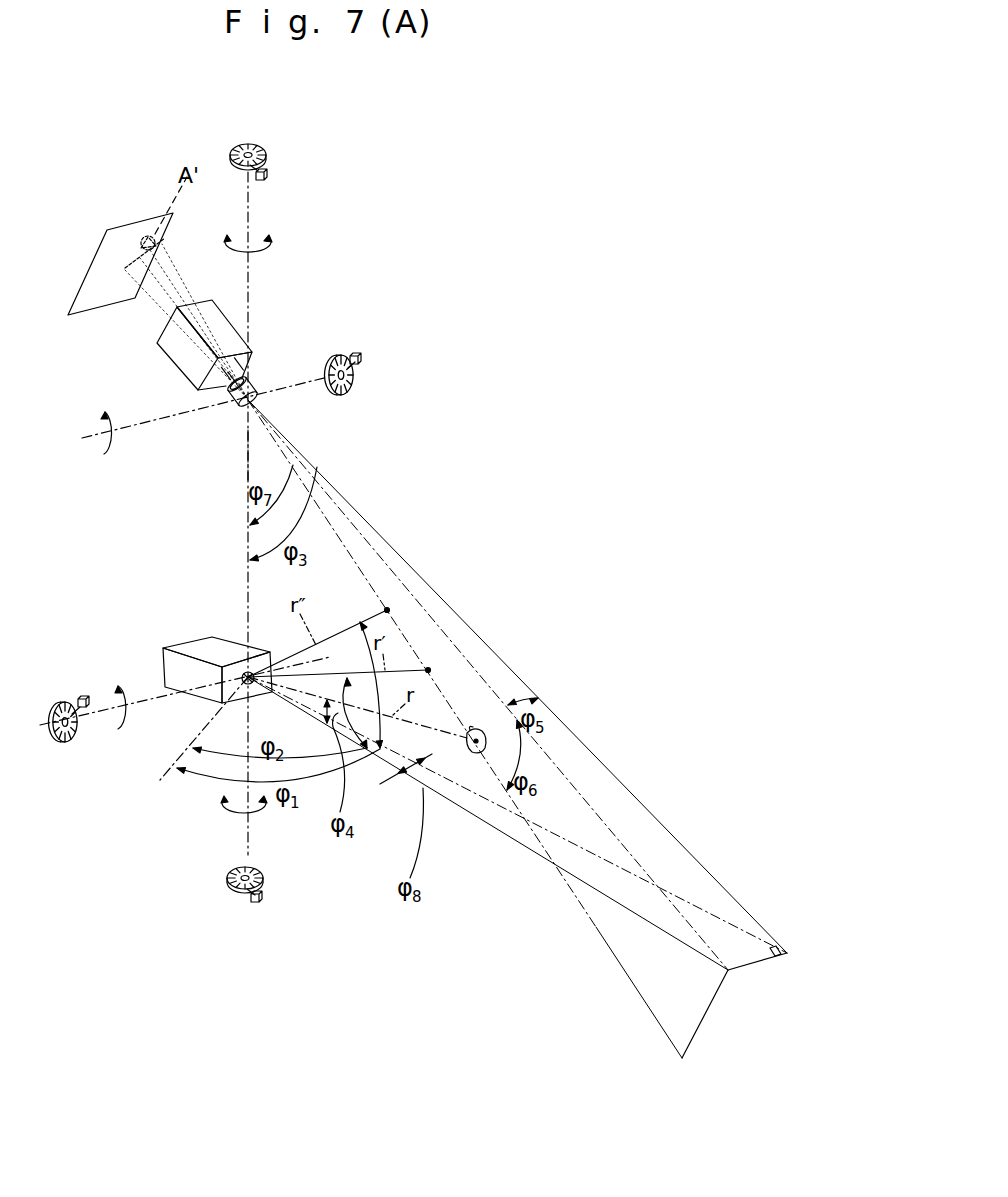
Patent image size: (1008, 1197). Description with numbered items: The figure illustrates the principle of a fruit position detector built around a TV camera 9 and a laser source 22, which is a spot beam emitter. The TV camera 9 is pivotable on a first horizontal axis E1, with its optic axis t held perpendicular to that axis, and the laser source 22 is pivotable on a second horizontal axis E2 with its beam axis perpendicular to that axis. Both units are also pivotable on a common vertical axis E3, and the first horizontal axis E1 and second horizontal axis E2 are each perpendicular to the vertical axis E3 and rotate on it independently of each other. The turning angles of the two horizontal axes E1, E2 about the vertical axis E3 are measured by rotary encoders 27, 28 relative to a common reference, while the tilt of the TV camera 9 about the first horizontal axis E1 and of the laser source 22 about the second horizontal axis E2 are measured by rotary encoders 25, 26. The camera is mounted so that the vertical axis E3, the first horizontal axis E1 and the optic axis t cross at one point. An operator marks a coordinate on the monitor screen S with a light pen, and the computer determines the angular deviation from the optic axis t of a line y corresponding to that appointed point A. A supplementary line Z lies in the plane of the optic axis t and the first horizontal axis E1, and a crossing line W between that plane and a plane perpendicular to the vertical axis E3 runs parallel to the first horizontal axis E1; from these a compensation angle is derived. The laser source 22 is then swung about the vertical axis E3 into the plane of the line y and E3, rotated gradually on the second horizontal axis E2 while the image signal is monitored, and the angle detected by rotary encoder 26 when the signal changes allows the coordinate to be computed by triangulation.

The TV camera 9 is at (227, 323).
The laser source 22 is at (202, 637).
The rotary encoder 25 is at (365, 378).
The rotary encoder 26 is at (76, 754).
The rotary encoder 27 is at (272, 899).
The rotary encoder 28 is at (272, 173).
The screen S is at (106, 228).
The target point A is at (473, 753).
The crossing line W is at (760, 962).
The first horizontal axis E1 is at (168, 421).
The second horizontal axis E2 is at (100, 707).
The vertical axis E3 is at (246, 462).
The optic axis t is at (623, 782).
The supplementary line Z is at (630, 853).
The line y is at (591, 928).